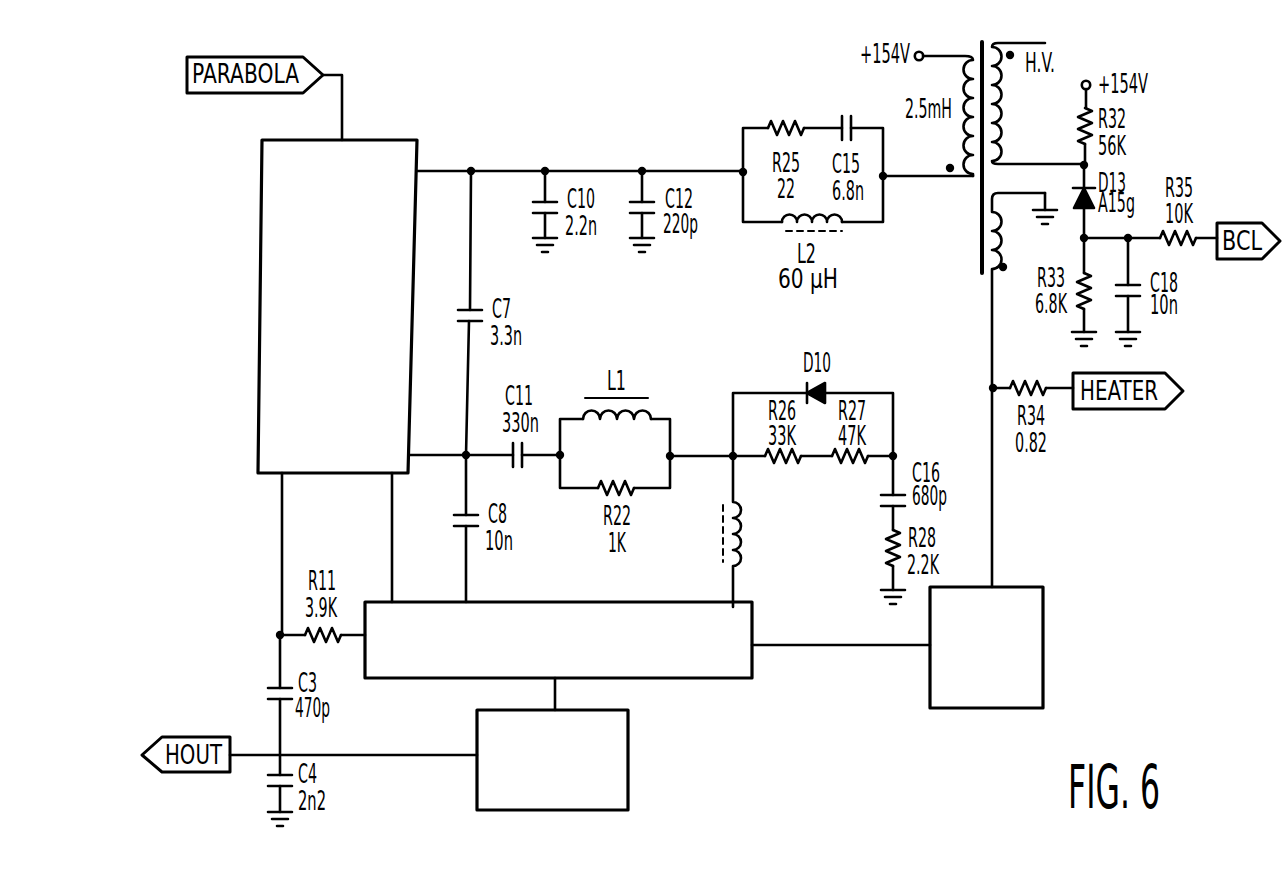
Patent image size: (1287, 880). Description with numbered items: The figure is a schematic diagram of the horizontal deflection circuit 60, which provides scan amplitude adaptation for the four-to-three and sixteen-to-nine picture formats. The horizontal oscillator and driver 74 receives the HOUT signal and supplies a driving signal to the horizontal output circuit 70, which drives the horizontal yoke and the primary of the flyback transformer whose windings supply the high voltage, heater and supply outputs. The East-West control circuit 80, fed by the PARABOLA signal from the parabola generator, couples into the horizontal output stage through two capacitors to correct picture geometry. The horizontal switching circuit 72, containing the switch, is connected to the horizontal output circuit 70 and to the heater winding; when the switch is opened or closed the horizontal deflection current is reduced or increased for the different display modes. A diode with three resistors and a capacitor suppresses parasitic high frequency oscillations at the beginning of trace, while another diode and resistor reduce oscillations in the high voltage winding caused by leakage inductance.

The horizontal deflection circuit 60 is at (683, 574).
The horizontal output circuit 70 is at (583, 604).
The horizontal switching circuit 72 is at (1043, 647).
The horizontal oscillator and driver 74 is at (630, 755).
The East-West control circuit 80 is at (262, 305).